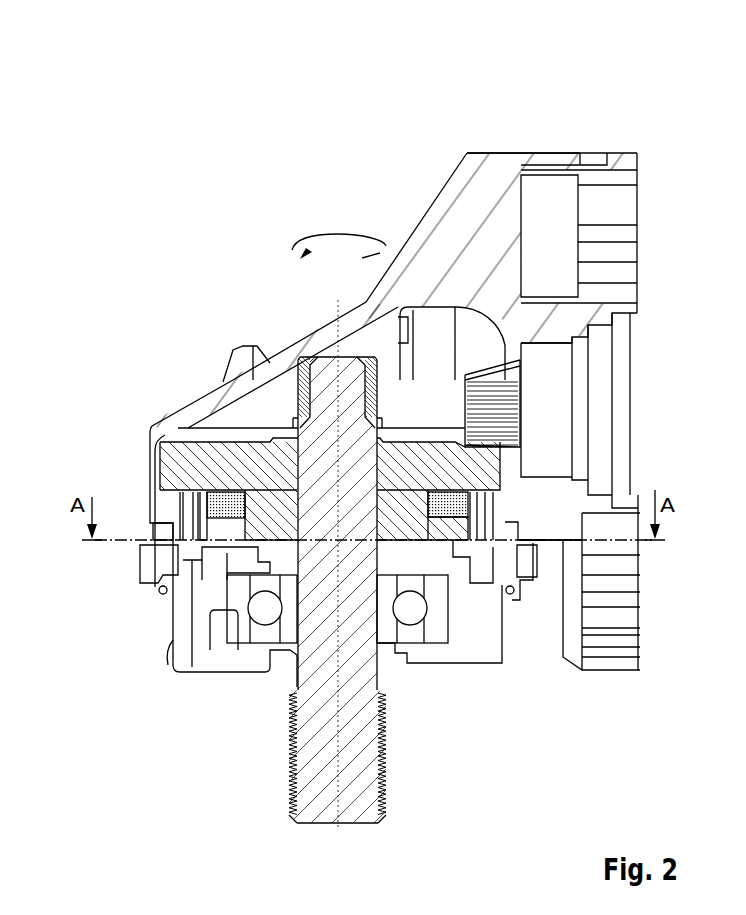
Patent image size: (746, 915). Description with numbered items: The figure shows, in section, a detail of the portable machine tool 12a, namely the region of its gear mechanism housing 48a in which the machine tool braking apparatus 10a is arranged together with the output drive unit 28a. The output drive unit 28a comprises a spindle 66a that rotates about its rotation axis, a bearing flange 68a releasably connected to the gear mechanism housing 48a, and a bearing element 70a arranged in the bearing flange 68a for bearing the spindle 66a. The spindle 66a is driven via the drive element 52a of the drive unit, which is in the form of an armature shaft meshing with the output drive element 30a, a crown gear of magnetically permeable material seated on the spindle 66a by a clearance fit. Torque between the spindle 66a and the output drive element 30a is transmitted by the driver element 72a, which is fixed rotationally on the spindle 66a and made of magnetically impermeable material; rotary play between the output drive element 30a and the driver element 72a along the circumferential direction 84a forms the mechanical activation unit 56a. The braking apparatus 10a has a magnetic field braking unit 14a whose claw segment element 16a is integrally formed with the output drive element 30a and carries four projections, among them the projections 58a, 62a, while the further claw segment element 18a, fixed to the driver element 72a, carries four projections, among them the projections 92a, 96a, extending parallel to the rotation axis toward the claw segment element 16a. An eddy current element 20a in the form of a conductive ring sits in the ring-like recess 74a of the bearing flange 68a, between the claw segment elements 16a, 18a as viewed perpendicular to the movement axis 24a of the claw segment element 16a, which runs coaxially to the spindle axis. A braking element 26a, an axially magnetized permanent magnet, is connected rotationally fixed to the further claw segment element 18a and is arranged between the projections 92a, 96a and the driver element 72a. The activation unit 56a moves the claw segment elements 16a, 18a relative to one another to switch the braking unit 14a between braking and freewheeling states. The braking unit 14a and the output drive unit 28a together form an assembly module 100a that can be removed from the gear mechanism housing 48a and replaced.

The machine tool braking apparatus 10a is at (104, 348).
The portable machine tool 12a is at (640, 97).
The magnetic field braking unit 14a is at (110, 500).
The claw segment element 16a is at (184, 540).
The further claw segment element 18a is at (232, 570).
The eddy current element 20a is at (200, 530).
The movement axis 24a is at (338, 843).
The braking element 26a is at (473, 535).
The output drive unit 28a is at (262, 192).
The output drive element 30a is at (230, 453).
The gear mechanism housing 48a is at (498, 153).
The drive element 52a is at (497, 402).
The activation unit 56a is at (230, 572).
The projection 58a is at (228, 516).
The projection 62a is at (500, 512).
The spindle 66a is at (320, 777).
The bearing flange 68a is at (180, 560).
The bearing element 70a is at (240, 642).
The driver element 72a is at (400, 522).
The ring-like recess 74a is at (193, 572).
The circumferential direction 84a is at (338, 232).
The projection 92a is at (190, 578).
The projection 96a is at (508, 545).
The assembly module 100a is at (195, 775).